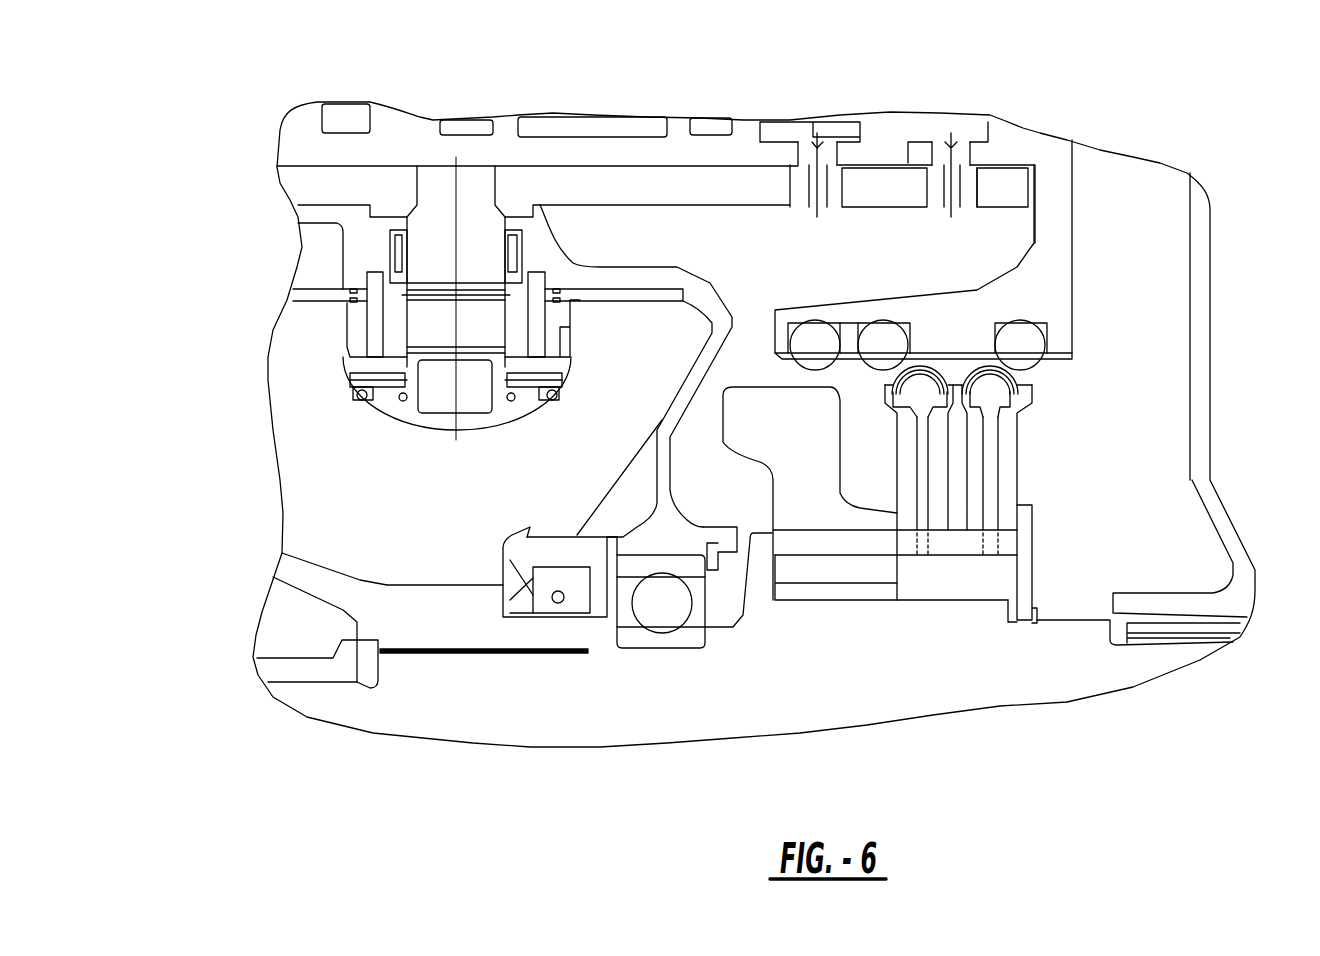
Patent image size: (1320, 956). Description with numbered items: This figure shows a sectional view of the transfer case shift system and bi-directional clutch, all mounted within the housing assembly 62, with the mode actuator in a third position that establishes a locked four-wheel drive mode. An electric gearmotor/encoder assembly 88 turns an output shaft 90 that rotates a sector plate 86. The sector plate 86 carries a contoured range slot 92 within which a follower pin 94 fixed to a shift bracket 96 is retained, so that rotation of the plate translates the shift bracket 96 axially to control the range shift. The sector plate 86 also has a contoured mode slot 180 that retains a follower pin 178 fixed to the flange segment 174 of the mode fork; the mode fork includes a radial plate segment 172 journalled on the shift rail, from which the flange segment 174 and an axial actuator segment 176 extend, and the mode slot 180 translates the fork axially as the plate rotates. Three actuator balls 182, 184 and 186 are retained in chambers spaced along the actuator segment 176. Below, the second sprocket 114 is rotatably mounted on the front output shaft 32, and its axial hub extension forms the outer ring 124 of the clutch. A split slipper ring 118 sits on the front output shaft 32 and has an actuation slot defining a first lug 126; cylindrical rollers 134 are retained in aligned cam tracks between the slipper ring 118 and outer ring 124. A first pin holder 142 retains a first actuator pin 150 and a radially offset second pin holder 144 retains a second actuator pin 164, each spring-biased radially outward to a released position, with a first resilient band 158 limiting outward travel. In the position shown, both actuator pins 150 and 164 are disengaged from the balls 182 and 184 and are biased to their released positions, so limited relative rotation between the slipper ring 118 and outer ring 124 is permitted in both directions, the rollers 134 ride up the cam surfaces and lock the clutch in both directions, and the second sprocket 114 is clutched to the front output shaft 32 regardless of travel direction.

The front output shaft 32 is at (474, 710).
The housing assembly 62 is at (1198, 284).
The sector plate 86 is at (640, 173).
The electric gearmotor/encoder assembly 88 is at (342, 325).
The output shaft 90 is at (437, 182).
The range slot 92 is at (793, 195).
The follower pin 94 is at (825, 190).
The shift bracket 96 is at (582, 150).
The second sprocket 114 is at (748, 423).
The slipper ring 118 is at (890, 590).
The outer ring 124 is at (792, 543).
The first lug 126 is at (1000, 573).
The rollers 134 is at (835, 570).
The first pin holder 142 is at (1012, 440).
The second pin holder 144 is at (907, 442).
The first actuator pin 150 is at (992, 470).
The first resilient band 158 is at (1040, 377).
The second actuator pin 164 is at (923, 470).
The radial plate segment 172 is at (1050, 241).
The flange segment 174 is at (920, 153).
The axial actuator segment 176 is at (937, 323).
The follower pin 178 is at (966, 188).
The mode slot 180 is at (973, 178).
The first actuator ball 182 is at (1023, 339).
The second actuator ball 184 is at (883, 343).
The third actuator ball 186 is at (813, 343).